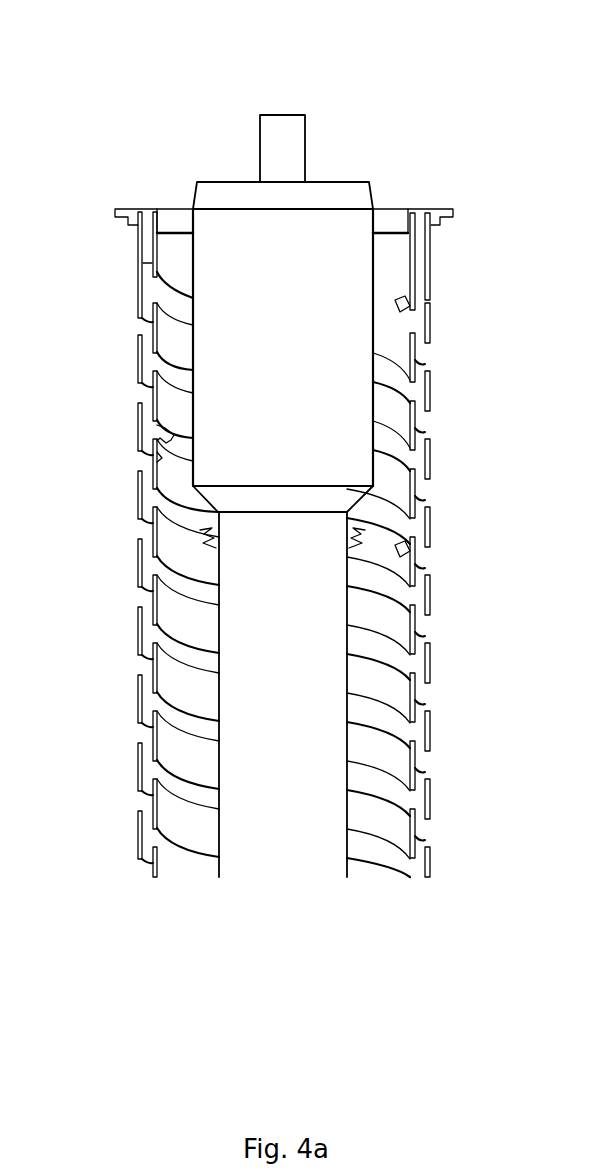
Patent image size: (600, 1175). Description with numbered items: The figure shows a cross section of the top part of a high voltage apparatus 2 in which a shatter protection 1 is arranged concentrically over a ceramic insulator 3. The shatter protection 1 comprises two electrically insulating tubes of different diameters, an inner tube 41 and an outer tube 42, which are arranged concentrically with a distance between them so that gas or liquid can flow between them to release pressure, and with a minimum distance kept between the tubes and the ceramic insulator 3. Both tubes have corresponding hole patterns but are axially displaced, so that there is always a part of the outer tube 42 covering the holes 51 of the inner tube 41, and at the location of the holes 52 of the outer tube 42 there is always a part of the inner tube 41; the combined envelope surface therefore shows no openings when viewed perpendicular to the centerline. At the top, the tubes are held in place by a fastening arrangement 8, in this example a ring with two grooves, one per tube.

The shatter protection 1 is at (135, 181).
The high voltage apparatus 2 is at (237, 131).
The ceramic insulator 3 is at (220, 738).
The mounting flange 8 is at (455, 212).
The inner tube 41 is at (153, 863).
The outer tube 42 is at (143, 832).
The holes of the inner tube 51 is at (152, 432).
The holes of the outer tube 52 is at (138, 598).